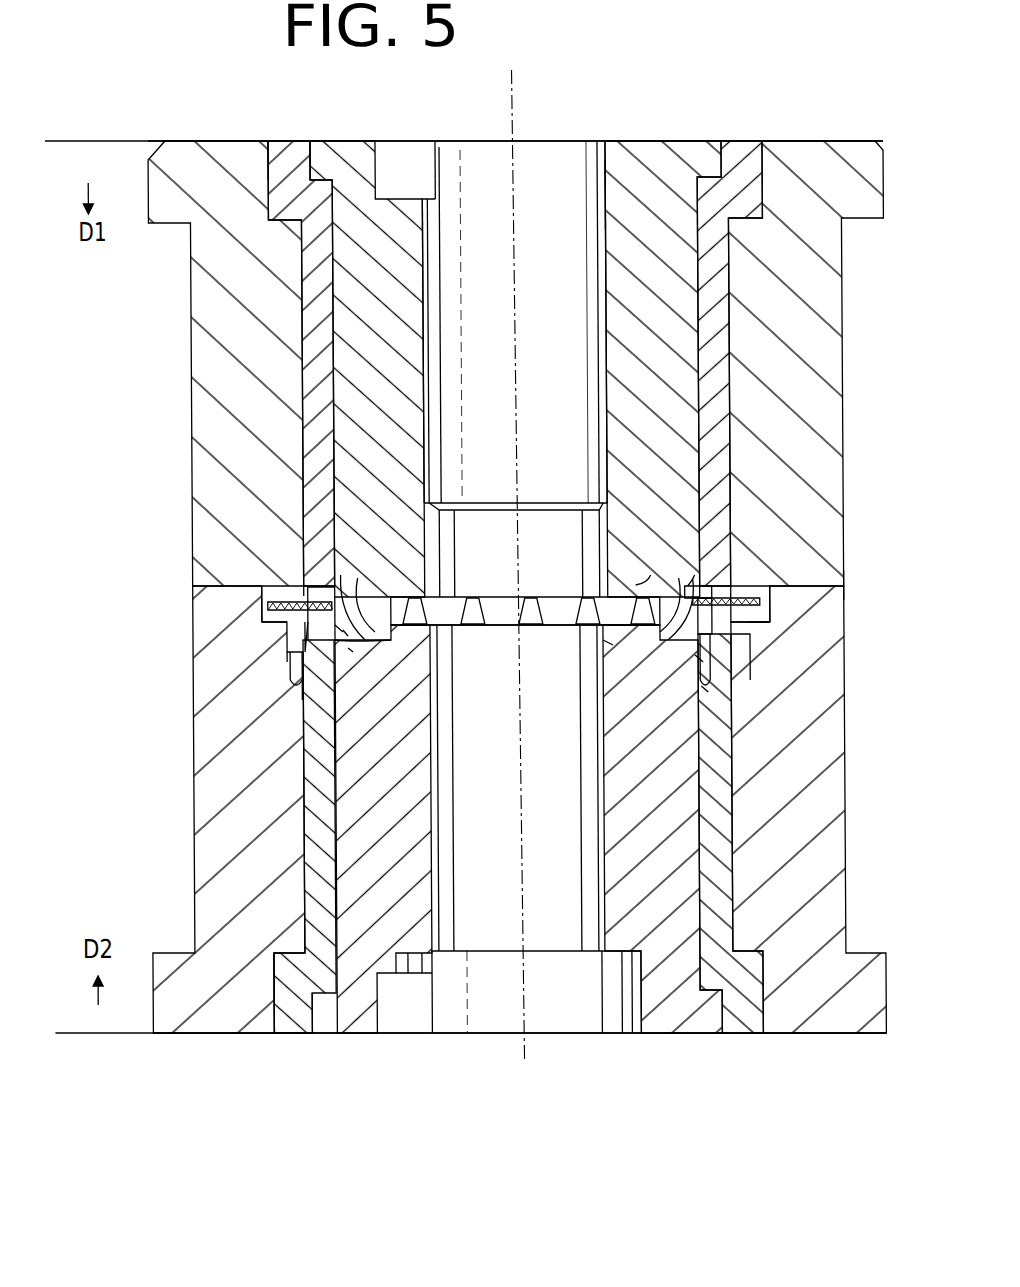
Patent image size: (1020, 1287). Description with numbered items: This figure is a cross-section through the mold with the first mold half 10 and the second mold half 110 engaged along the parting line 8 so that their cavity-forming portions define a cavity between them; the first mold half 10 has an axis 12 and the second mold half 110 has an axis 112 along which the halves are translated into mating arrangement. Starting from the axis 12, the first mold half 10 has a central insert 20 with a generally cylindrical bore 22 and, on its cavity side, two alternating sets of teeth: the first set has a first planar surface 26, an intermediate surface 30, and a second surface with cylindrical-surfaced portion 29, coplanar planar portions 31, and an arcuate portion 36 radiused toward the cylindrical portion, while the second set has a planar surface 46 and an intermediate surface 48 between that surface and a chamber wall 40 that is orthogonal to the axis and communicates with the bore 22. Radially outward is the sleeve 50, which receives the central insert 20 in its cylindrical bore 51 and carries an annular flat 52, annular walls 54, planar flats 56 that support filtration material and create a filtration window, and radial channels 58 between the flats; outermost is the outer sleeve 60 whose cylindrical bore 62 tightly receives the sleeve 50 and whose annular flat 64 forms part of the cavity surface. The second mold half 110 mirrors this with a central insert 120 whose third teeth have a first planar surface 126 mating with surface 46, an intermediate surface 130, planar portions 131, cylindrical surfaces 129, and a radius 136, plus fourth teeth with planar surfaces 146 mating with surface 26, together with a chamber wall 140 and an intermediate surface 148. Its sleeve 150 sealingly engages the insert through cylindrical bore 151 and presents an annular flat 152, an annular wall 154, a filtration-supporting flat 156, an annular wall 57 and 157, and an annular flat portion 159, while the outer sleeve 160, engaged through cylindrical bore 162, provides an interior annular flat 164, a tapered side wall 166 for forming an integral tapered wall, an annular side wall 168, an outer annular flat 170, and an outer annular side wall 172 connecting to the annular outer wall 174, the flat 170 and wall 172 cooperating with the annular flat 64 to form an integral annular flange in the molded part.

The parting line 8 is at (846, 584).
The first mold half 10 is at (911, 104).
The axis 12 is at (516, 108).
The central insert 20 is at (662, 150).
The cylindrical bore 22 is at (606, 196).
The first planar surface 26 is at (425, 603).
The cylindrical-surfaced portion 29 is at (336, 595).
The intermediate surface 30 is at (352, 635).
The planar portions 31 is at (337, 632).
The arcuate portion 36 is at (355, 620).
The chamber wall 40 is at (462, 596).
The planar surface 46 is at (692, 576).
The intermediate surface 48 is at (645, 578).
The sleeve 50 is at (732, 143).
The cylindrical bore 51 is at (333, 207).
The annular flat 52 is at (326, 580).
The annular walls 54 is at (714, 586).
The planar flats 56 is at (731, 596).
The annular wall 57 is at (302, 590).
The radially extending channels 58 is at (312, 586).
The outer sleeve 60 is at (841, 143).
The cylindrical bore 62 is at (308, 227).
The annular flat 64 is at (280, 598).
The second mold half 110 is at (867, 1052).
The axis 112 is at (523, 1043).
The central insert 120 is at (668, 1017).
The first planar surface 126 is at (607, 643).
The surfaces 129 is at (702, 690).
The intermediate surface 130 is at (692, 620).
The planar portions 131 is at (700, 533).
The radius 136 is at (697, 660).
The chamber wall 140 is at (595, 620).
The planar surfaces 146 is at (345, 650).
The intermediate surface 148 is at (340, 633).
The sleeve 150 is at (740, 1017).
The cylindrical bore 151 is at (340, 950).
The annular flat 152 is at (712, 690).
The annular wall 154 is at (716, 640).
The flat 156 is at (752, 636).
The annular wall 157 is at (292, 688).
The annular flat portion 159 is at (290, 686).
The outer sleeve 160 is at (820, 1007).
The cylindrical bore 162 is at (307, 945).
The interior annular flat 164 is at (297, 700).
The tapered side wall 166 is at (288, 666).
The annular side wall 168 is at (280, 620).
The outer annular flat 170 is at (768, 627).
The outer annular side wall 172 is at (770, 600).
The annular outer wall 174 is at (262, 596).